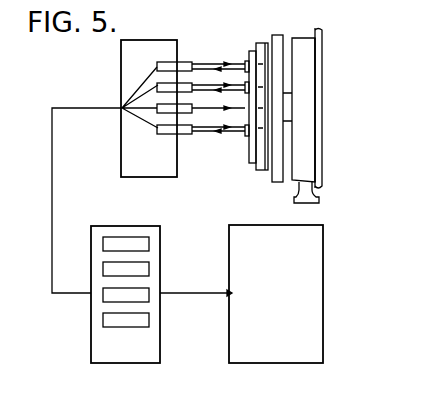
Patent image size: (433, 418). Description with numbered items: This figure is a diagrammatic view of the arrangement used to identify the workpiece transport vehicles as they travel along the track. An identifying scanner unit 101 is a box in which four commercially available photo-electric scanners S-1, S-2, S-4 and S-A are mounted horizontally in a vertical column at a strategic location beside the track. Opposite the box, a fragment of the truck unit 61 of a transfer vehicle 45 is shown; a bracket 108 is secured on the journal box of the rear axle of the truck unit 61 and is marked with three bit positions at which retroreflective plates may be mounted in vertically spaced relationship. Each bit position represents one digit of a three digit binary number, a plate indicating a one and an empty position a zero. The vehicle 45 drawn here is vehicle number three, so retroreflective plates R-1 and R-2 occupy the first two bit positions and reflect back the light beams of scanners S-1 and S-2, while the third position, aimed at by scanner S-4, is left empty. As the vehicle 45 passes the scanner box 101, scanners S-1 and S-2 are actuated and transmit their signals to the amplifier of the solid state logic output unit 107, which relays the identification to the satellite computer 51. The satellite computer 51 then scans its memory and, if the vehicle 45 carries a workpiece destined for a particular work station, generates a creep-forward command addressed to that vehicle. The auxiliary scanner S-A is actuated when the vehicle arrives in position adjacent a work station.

The identifying scanner unit 101 is at (137, 48).
The photo-electric scanner S-1 is at (176, 67).
The photo-electric scanner S-2 is at (162, 87).
The photo-electric scanner S-4 is at (160, 111).
The auxiliary scanner S-A is at (160, 130).
The retroreflective plate R-1 is at (247, 61).
The retroreflective plate R-2 is at (247, 85).
The transfer vehicle 45 is at (263, 175).
The bracket 108 is at (261, 50).
The truck unit 61 is at (278, 45).
The solid state logic output unit 107 is at (105, 344).
The satellite computer 51 is at (311, 350).